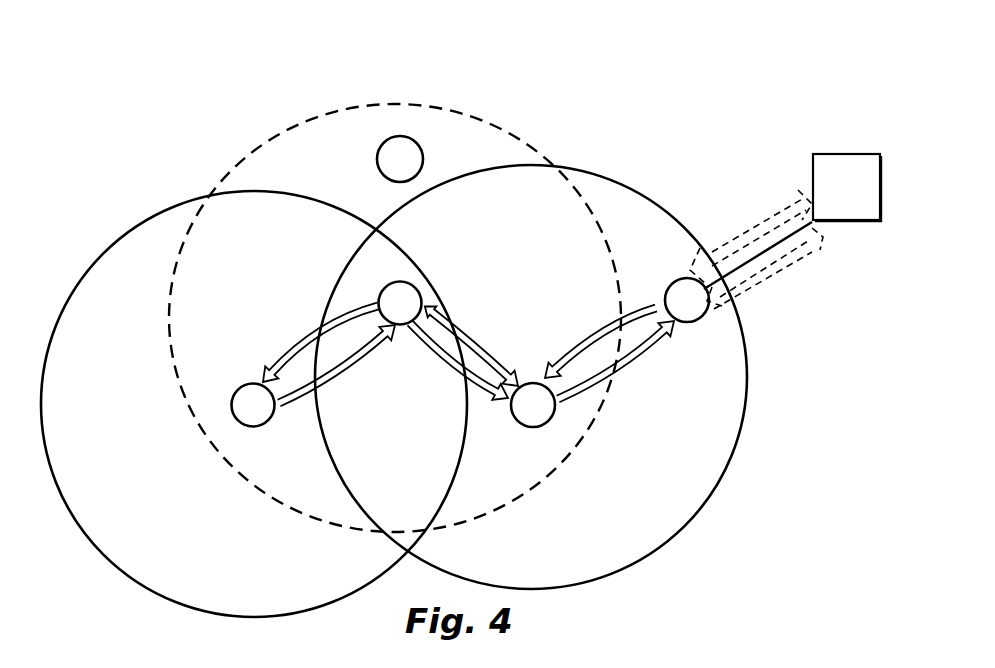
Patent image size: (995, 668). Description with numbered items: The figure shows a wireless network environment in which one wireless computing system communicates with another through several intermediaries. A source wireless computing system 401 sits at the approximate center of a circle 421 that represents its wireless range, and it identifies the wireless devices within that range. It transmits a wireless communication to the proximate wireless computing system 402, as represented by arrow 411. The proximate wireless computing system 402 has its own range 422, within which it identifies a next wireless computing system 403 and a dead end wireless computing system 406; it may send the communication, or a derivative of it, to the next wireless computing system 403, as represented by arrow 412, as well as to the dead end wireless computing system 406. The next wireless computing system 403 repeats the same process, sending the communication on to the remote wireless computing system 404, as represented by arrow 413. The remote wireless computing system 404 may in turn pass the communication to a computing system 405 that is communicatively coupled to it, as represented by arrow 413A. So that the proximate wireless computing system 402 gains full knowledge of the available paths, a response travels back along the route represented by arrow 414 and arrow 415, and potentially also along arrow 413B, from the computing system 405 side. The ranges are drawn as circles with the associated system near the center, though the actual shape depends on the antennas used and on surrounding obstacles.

The source wireless computing system 401 is at (239, 414).
The proximate wireless computing system 402 is at (386, 312).
The next wireless computing system 403 is at (519, 414).
The remote wireless computing system 404 is at (673, 309).
The computing system 405 is at (832, 197).
The dead end wireless computing system 406 is at (386, 168).
The arrow 411 is at (332, 373).
The arrow 412 is at (450, 365).
The arrow 413 is at (632, 367).
The arrow 413A is at (777, 272).
The arrow 413B is at (748, 228).
The arrow 414 is at (593, 330).
The arrow 415 is at (485, 337).
The circle 421 is at (123, 580).
The range 422 is at (302, 123).